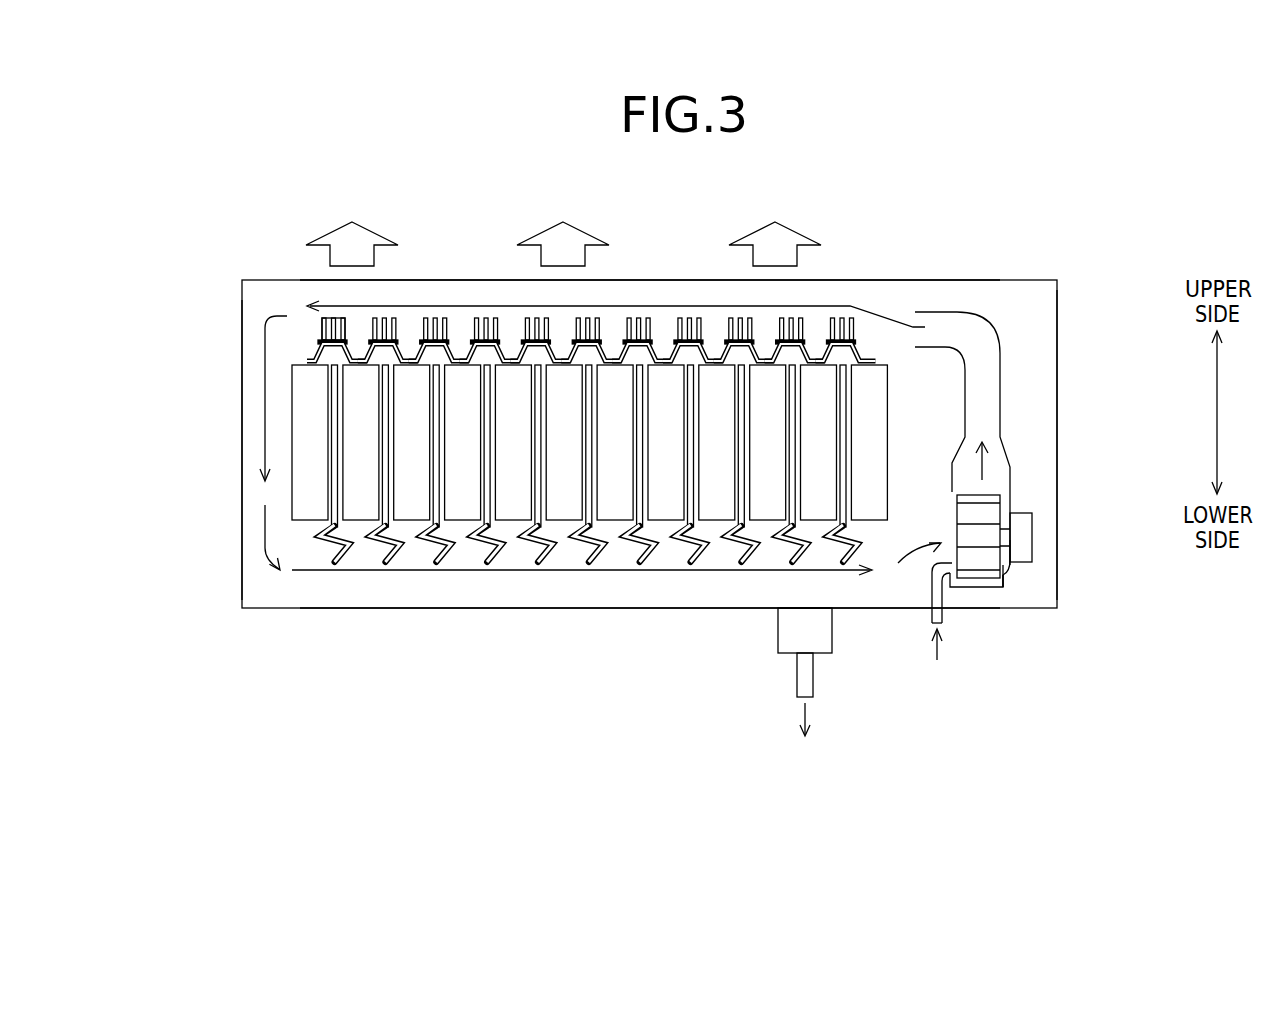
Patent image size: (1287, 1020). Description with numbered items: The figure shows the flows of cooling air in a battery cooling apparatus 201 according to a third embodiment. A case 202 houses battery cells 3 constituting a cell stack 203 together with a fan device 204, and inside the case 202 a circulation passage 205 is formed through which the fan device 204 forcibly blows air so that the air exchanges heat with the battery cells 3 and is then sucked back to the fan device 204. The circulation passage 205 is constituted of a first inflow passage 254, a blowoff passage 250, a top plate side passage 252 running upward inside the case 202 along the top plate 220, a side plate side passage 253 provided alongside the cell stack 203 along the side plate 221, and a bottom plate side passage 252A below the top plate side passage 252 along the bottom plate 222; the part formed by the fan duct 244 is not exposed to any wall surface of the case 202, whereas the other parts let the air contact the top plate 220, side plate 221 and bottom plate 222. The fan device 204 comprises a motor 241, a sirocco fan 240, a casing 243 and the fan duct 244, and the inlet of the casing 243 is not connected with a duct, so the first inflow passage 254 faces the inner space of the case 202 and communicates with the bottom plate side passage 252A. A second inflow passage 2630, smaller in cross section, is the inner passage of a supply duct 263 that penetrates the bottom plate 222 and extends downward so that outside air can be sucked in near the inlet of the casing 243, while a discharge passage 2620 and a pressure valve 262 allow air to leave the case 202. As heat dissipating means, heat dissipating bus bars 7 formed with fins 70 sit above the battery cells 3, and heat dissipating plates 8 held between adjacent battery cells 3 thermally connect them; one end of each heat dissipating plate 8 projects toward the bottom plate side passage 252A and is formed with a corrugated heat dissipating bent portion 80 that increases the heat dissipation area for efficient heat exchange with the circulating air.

The battery cooling apparatus 201 is at (998, 250).
The case 202 is at (1060, 306).
The cell stack 203 is at (303, 343).
The fan device 204 is at (1024, 568).
The circulation passage 205 is at (262, 397).
The top plate 220 is at (893, 281).
The side plate 221 is at (240, 443).
The bottom plate 222 is at (478, 608).
The sirocco fan 240 is at (1002, 588).
The motor 241 is at (1033, 530).
The casing 243 is at (980, 588).
The fan duct 244 is at (1000, 408).
The blowoff passage 250 is at (992, 483).
The top plate side passage 252 is at (632, 295).
The bottom plate side passage 252A is at (550, 575).
The side plate side passage 253 is at (255, 473).
The first inflow passage 254 is at (957, 518).
The pressure valve 262 is at (778, 657).
The discharge passage 2620 is at (800, 632).
The supply duct 263 is at (928, 622).
The second inflow passage 2630 is at (946, 623).
The battery cell 3 is at (357, 402).
The heat dissipating bus bar 7 is at (310, 343).
The fin 70 is at (345, 320).
The heat dissipating plate 8 is at (338, 472).
The heat dissipating bent portion 80 is at (327, 549).